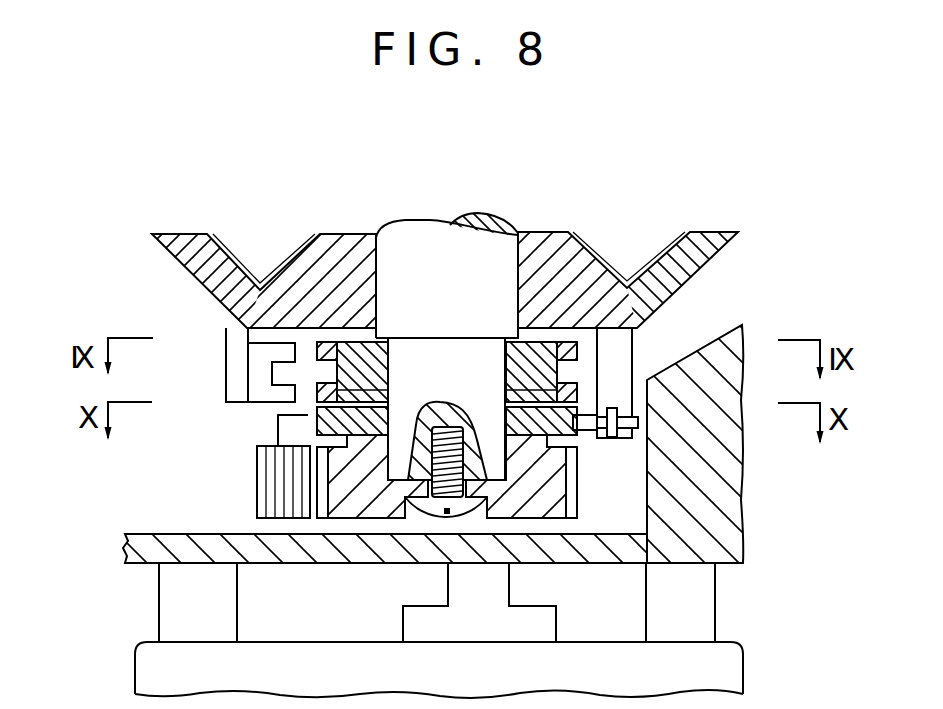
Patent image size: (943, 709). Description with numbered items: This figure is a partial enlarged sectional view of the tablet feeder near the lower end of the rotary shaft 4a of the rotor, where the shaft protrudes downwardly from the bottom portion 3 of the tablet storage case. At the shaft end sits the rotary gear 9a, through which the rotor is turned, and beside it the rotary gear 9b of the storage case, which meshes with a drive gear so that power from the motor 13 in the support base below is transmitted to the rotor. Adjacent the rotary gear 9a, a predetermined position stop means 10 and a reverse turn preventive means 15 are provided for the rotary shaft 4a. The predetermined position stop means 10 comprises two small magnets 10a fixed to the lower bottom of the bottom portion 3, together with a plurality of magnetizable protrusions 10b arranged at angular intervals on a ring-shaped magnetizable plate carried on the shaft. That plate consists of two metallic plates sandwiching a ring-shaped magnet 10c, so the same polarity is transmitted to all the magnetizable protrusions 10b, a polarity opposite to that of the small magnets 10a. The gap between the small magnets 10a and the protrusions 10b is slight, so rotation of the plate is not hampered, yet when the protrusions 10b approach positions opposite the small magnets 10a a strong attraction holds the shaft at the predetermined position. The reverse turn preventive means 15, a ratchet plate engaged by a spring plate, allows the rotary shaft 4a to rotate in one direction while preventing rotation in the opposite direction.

The bottom portion 3 is at (183, 273).
The rotary shaft 4a is at (435, 250).
The rotary gear 9a is at (357, 507).
The rotary gear 9b is at (287, 510).
The predetermined position stop means 10 is at (215, 388).
The small magnets 10a is at (318, 352).
The magnetizable protrusions 10b is at (322, 390).
The ring-shaped magnet 10c is at (363, 367).
The motor 13 is at (727, 657).
The reverse turn preventive means 15 is at (618, 445).